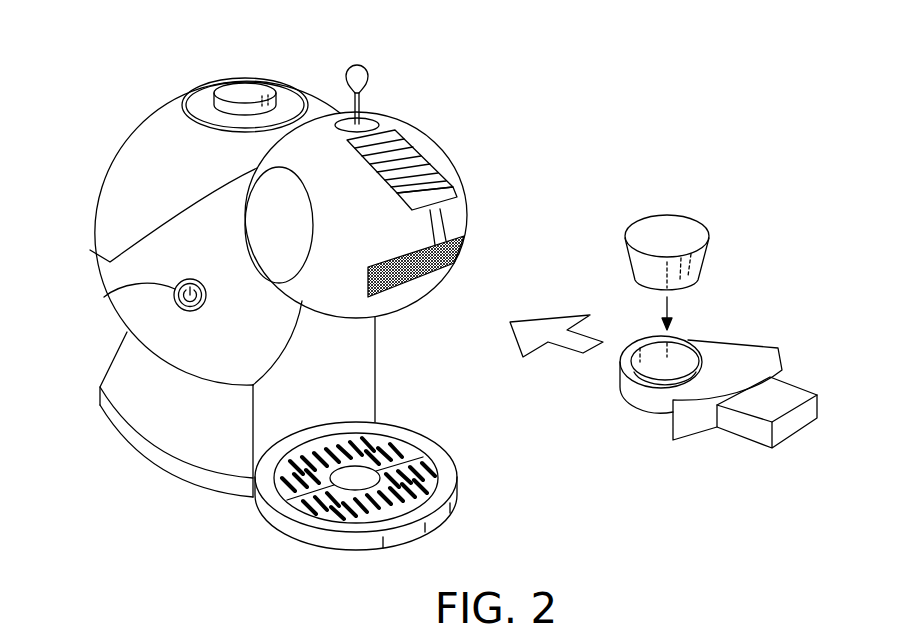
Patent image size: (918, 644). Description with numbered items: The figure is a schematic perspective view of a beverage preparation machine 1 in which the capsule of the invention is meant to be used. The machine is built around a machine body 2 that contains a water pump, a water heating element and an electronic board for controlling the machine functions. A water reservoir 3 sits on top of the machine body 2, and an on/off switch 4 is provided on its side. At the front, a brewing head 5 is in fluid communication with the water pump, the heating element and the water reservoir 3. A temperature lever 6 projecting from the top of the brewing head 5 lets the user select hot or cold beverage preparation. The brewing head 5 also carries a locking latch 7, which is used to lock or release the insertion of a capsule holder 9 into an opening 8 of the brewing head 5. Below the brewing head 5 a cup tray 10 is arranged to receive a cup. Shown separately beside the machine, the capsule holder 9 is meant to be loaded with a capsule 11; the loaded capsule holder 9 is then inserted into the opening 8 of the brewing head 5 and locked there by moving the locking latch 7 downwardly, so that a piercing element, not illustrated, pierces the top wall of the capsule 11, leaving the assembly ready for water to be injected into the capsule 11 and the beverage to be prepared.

The beverage preparation machine 1 is at (434, 106).
The machine body 2 is at (126, 312).
The water reservoir 3 is at (112, 179).
The on/off switch 4 is at (104, 297).
The brewing head 5 is at (469, 216).
The temperature lever 6 is at (357, 64).
The locking latch 7 is at (414, 167).
The opening 8 is at (462, 252).
The capsule holder 9 is at (792, 393).
The cup tray 10 is at (292, 530).
The capsule 11 is at (675, 227).